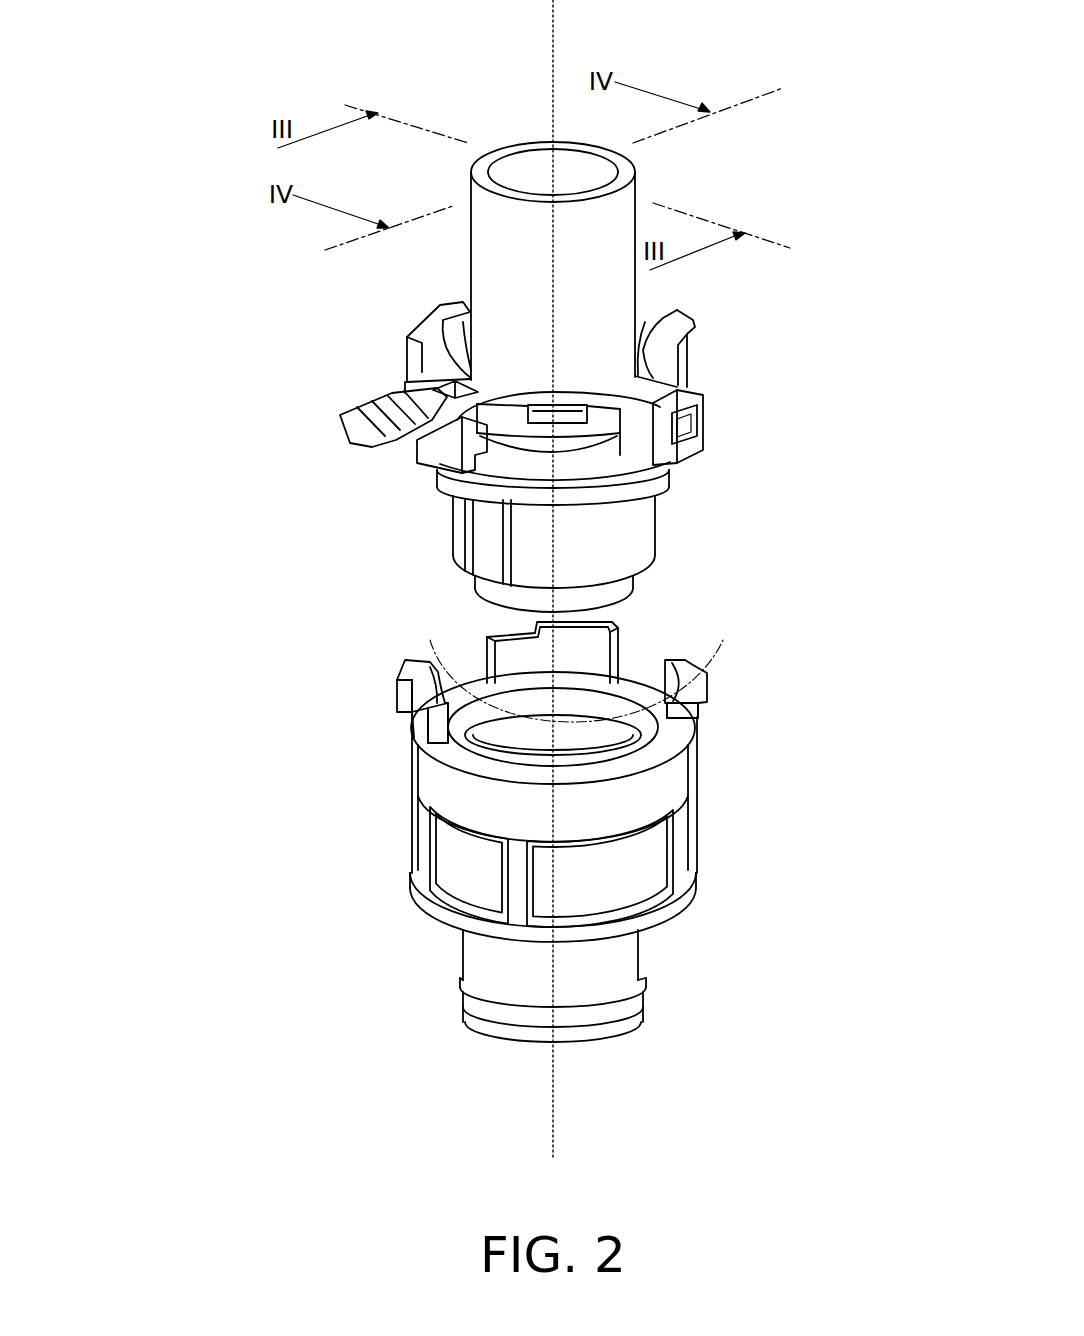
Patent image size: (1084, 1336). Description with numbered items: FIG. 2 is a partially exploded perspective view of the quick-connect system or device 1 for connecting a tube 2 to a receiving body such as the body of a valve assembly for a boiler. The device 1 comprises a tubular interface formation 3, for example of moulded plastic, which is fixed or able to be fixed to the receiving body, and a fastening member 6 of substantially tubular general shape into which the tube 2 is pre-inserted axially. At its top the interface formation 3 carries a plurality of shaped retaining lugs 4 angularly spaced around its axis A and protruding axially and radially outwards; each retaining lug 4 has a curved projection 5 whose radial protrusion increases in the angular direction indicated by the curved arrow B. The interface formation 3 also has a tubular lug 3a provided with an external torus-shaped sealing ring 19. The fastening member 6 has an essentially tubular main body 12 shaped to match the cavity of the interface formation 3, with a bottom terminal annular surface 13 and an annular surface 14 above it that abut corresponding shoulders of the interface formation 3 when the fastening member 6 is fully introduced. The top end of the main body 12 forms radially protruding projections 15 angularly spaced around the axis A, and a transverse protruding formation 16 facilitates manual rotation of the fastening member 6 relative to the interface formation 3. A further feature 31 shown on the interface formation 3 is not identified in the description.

The quick-connect system or device 1 is at (353, 504).
The tube 2 is at (552, 550).
The tubular interface formation 3 is at (534, 866).
The tubular lug 3a is at (627, 972).
The retaining lugs 4 is at (715, 690).
The curved projection 5 is at (397, 678).
The fastening member 6 is at (544, 376).
The main body 12 is at (455, 534).
The bottom terminal annular surface 13 is at (650, 570).
The annular surface 14 is at (633, 508).
The projections 15 is at (425, 324).
The transverse protruding formation 16 is at (383, 396).
The torus-shaped sealing ring 19 is at (492, 1018).
The bore 31 is at (467, 748).
The axis A is at (553, 68).
The curved arrow B is at (627, 630).